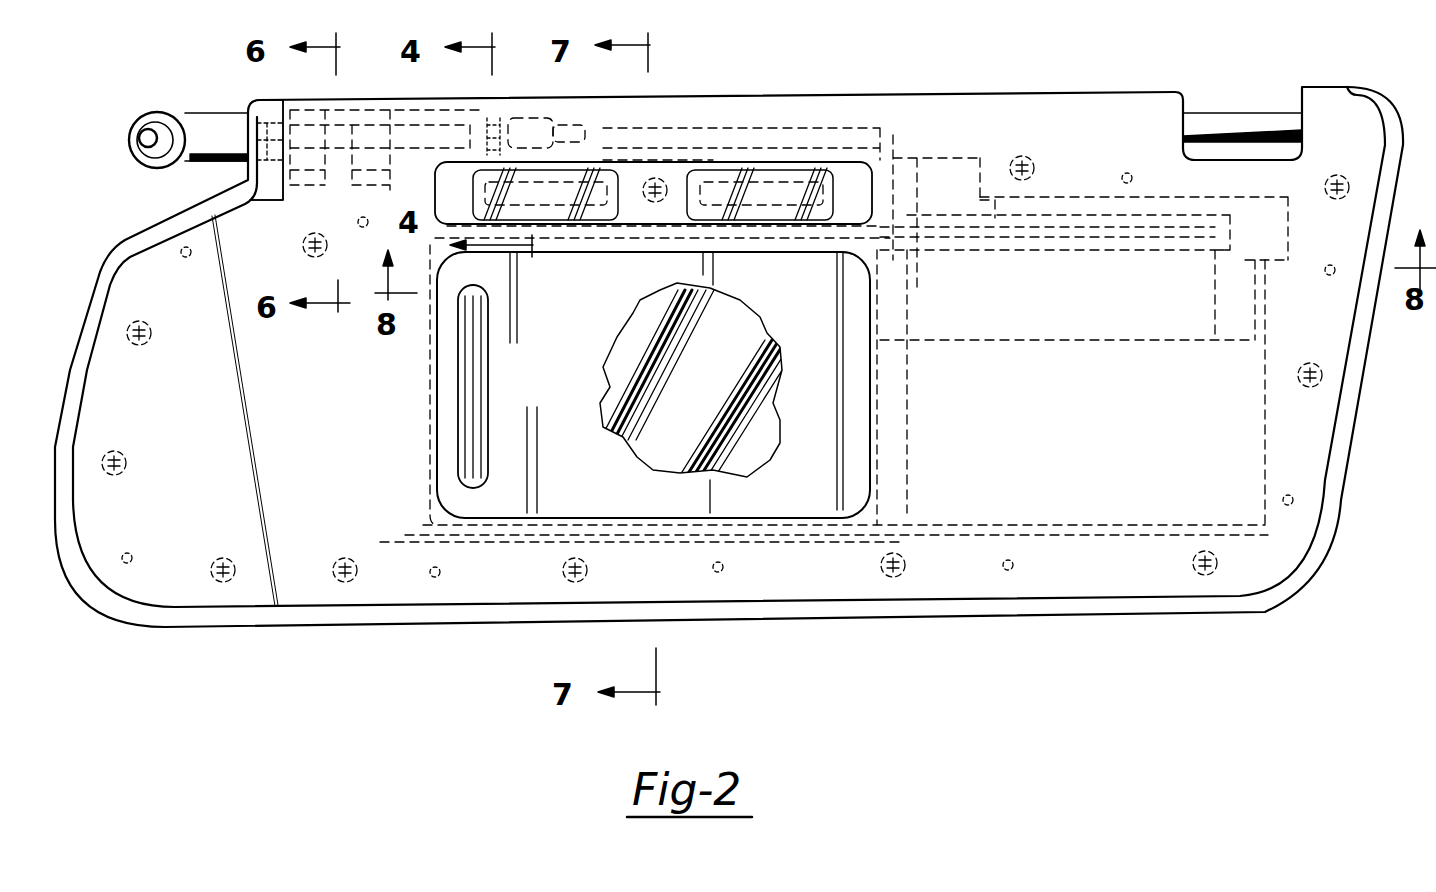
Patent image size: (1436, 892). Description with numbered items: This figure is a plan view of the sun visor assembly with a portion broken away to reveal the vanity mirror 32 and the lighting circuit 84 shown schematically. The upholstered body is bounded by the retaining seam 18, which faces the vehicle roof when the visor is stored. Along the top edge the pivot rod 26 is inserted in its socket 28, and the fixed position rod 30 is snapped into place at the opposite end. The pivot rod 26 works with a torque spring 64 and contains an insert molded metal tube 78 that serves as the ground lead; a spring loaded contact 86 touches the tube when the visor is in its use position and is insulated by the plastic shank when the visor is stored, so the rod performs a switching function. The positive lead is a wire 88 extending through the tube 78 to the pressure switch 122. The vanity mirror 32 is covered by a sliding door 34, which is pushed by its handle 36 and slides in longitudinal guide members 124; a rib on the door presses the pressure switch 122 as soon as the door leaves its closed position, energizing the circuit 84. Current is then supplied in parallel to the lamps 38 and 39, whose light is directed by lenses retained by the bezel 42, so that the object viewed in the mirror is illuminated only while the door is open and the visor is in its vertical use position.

The retaining seam 18 is at (80, 398).
The pivot rod 26 is at (182, 113).
The socket 28 is at (262, 98).
The fixed position rod 30 is at (1224, 113).
The vanity mirror 32 is at (700, 394).
The sliding door 34 is at (450, 415).
The handle 36 is at (486, 362).
The lamp 38 is at (530, 253).
The lamp 39 is at (780, 255).
The bezel 42 is at (878, 155).
The torque spring 64 is at (368, 107).
The metal tube 78 is at (570, 112).
The lighting circuit 84 is at (853, 130).
The spring loaded contact 86 is at (496, 135).
The wire 88 is at (140, 147).
The pressure switch 122 is at (1103, 255).
The longitudinal guide members 124 is at (930, 240).